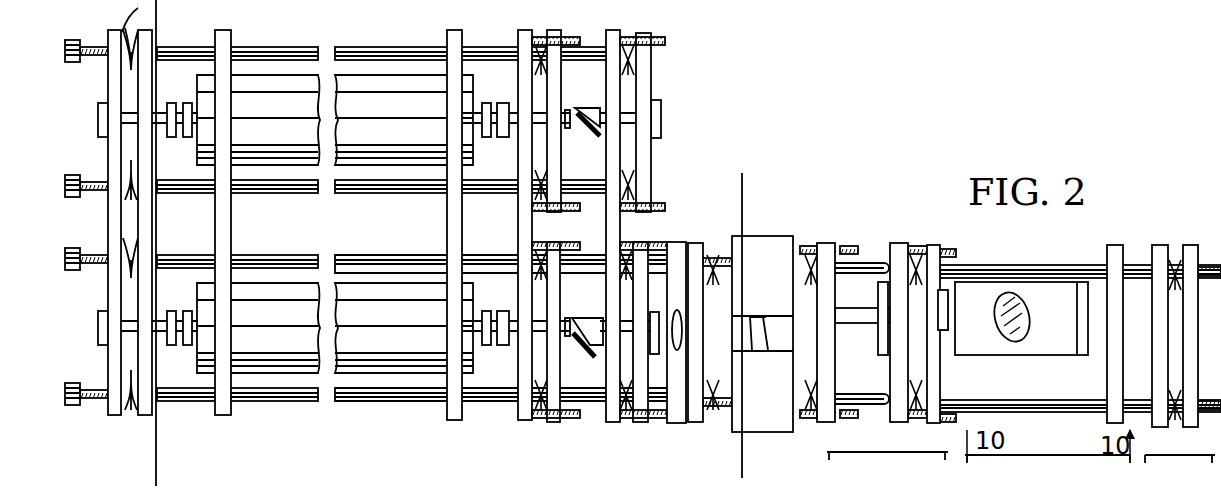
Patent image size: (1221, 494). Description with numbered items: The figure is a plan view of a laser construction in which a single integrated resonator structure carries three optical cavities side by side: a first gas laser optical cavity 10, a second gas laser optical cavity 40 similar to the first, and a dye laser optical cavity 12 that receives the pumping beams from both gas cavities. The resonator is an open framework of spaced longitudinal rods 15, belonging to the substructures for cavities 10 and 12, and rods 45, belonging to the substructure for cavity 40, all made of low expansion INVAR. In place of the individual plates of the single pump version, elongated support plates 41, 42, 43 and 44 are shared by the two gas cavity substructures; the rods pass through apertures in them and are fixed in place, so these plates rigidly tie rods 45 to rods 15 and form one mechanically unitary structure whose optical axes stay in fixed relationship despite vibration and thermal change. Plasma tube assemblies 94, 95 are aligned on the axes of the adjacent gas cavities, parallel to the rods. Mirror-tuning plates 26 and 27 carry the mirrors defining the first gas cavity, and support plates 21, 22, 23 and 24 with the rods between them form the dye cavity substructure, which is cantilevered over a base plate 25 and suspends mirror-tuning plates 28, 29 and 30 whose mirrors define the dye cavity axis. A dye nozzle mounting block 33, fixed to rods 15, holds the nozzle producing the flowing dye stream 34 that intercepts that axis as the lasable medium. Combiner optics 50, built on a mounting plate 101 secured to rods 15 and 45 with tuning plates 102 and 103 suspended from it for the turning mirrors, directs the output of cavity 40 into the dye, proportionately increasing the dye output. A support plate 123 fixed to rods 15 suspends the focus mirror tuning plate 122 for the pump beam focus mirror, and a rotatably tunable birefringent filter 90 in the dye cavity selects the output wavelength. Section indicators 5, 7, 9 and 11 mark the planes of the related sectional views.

The gas laser optical cavity 10 is at (378, 433).
The dye laser optical cavity 12 is at (784, 191).
The rods 15 is at (262, 232).
The support plate 21 is at (722, 250).
The support plate 22 is at (803, 250).
The support plate 23 is at (1114, 247).
The support plate 24 is at (1188, 218).
The base plate 25 is at (122, 30).
The mirror-tuning plate 26 is at (114, 416).
The mirror-tuning plate 27 is at (558, 10).
The mirror-tuning plate 28 is at (693, 250).
The mirror-tuning plate 29 is at (834, 250).
The mirror-tuning plate 30 is at (1190, 247).
The dye nozzle mounting block 33 is at (779, 405).
The flowing dye stream 34 is at (748, 320).
The second gas laser optical cavity 40 is at (336, 35).
The elongated support plate 41 is at (146, 416).
The elongated support plate 42 is at (223, 416).
The elongated support plate 43 is at (455, 421).
The elongated support plate 44 is at (525, 421).
The rods 45 is at (162, 47).
The combiner optics 50 is at (688, 125).
The birefringent filter 90 is at (1020, 300).
The plasma tube assembly 94 is at (243, 78).
The plasma tube assembly 95 is at (316, 373).
The mounting plate 101 is at (612, 31).
The tuning plate 102 is at (655, 70).
The tuning plate 103 is at (640, 422).
The focus mirror tuning plate 122 is at (931, 248).
The support plate 123 is at (893, 247).
The section line 5- 5 is at (125, 477).
The section line 7- 7 is at (740, 181).
The section line 9- 9 is at (945, 430).
The section line 11- 11 is at (1212, 432).